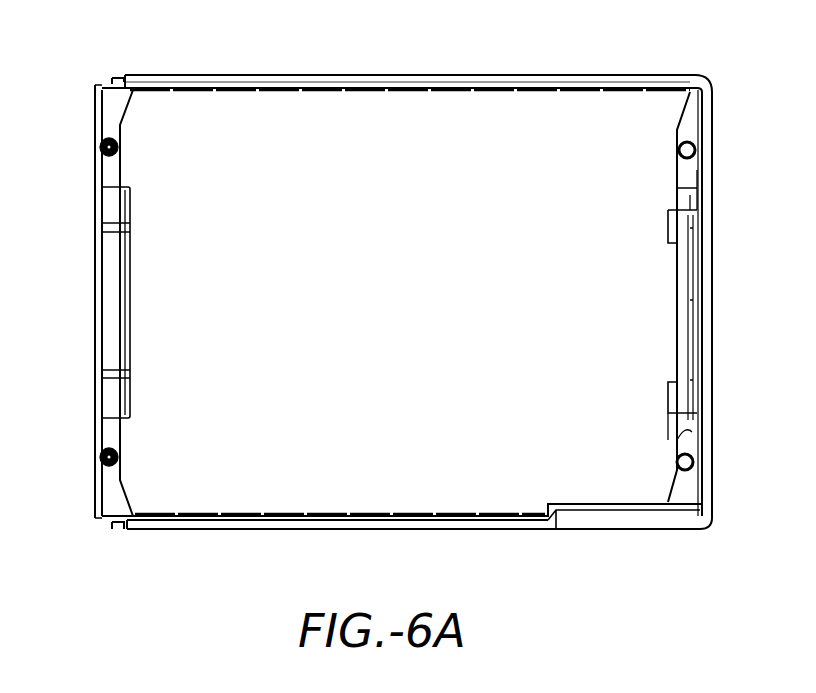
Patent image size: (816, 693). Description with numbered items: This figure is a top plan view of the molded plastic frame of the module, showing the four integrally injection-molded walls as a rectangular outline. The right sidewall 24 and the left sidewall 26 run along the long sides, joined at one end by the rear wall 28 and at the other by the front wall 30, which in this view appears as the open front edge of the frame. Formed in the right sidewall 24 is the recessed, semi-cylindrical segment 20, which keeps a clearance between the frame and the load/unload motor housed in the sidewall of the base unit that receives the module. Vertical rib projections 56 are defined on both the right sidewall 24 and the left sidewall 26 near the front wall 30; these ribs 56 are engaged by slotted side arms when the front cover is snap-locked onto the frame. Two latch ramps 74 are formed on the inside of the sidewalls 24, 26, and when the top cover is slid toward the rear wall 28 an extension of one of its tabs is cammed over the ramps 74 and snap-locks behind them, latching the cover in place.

The recessed semi-cylindrical segment 20 is at (620, 533).
The right sidewall 24 is at (448, 530).
The left sidewall 26 is at (440, 75).
The rear wall 28 is at (708, 208).
The front wall 30 is at (95, 293).
The vertical rib projections 56 is at (118, 78).
The latch ramps 74 is at (297, 97).